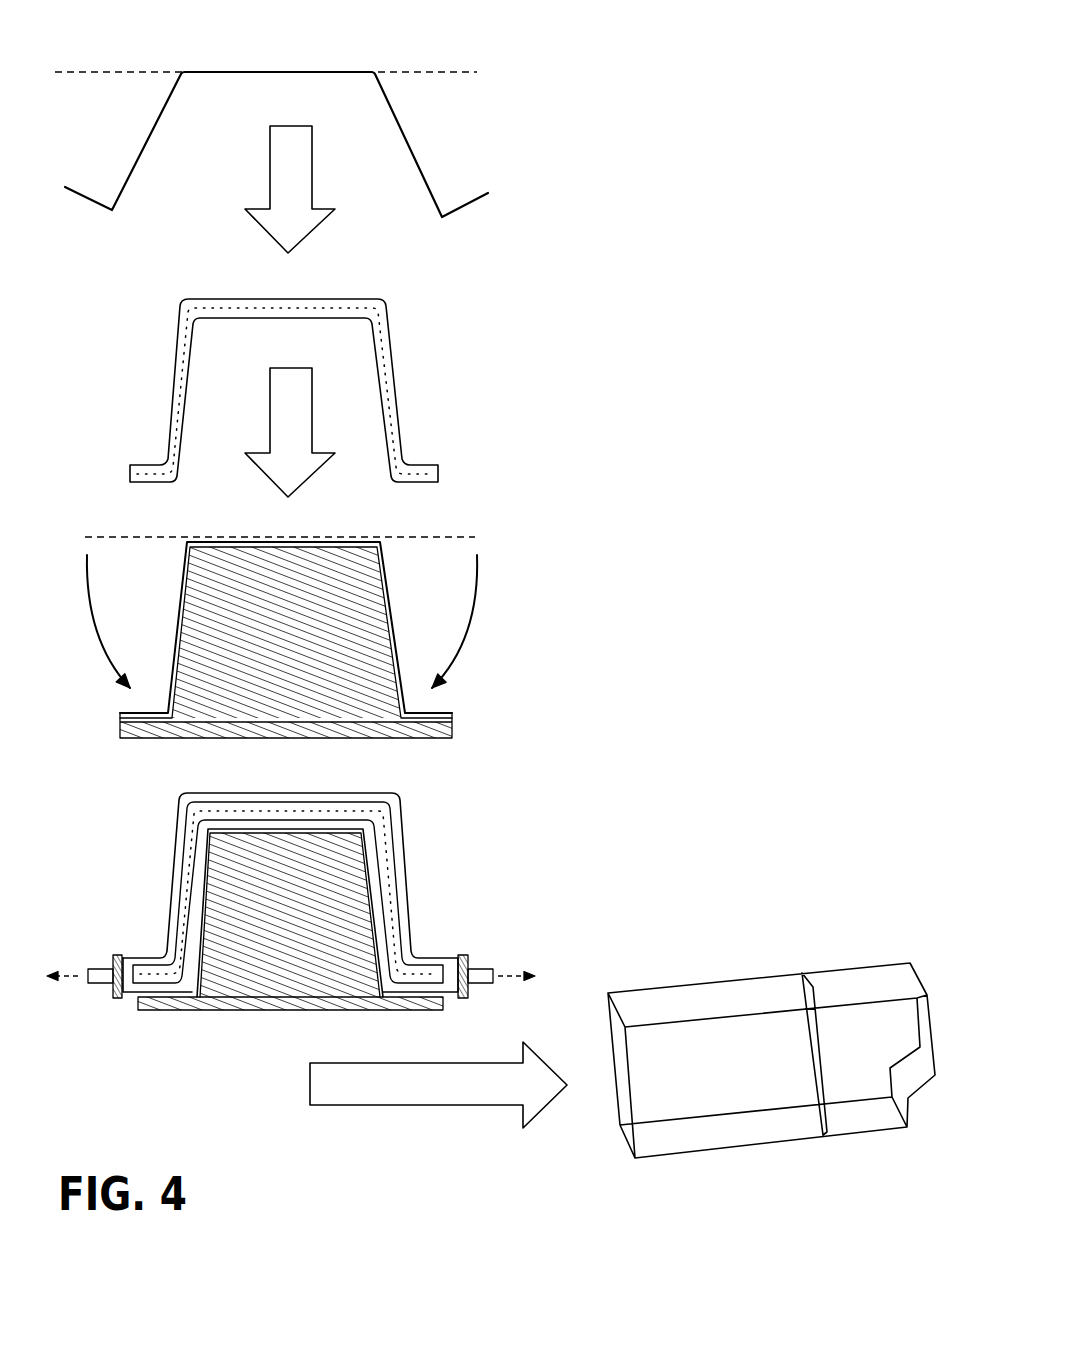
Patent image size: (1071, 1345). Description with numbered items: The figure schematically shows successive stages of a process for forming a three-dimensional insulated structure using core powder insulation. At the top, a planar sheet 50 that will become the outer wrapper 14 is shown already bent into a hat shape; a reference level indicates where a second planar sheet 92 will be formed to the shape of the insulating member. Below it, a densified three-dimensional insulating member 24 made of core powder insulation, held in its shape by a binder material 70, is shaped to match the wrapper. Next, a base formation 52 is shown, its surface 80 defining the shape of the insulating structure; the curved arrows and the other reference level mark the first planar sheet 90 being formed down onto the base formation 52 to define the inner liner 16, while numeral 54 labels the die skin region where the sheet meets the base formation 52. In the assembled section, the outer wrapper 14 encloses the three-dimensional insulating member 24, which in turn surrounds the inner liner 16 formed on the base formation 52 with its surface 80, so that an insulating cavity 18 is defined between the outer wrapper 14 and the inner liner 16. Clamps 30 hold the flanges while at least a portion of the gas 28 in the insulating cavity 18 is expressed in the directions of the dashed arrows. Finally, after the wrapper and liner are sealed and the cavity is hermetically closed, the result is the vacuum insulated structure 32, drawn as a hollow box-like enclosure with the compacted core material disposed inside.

The outer wrapper 14 is at (467, 203).
The inner liner 16 is at (388, 580).
The insulating cavity 18 is at (180, 858).
The three-dimensional insulating member 24 is at (395, 365).
The gas 28 is at (70, 977).
The clamp 30 is at (102, 982).
The vacuum insulated structure 32 is at (625, 1160).
The planar sheet 50 is at (416, 70).
The base formation 52 is at (373, 687).
The die coating 54 is at (193, 581).
The binder material 70 is at (175, 355).
The surface of the base formation 80 is at (365, 882).
The first planar sheet 90 is at (435, 535).
The second planar sheet 92 is at (128, 70).